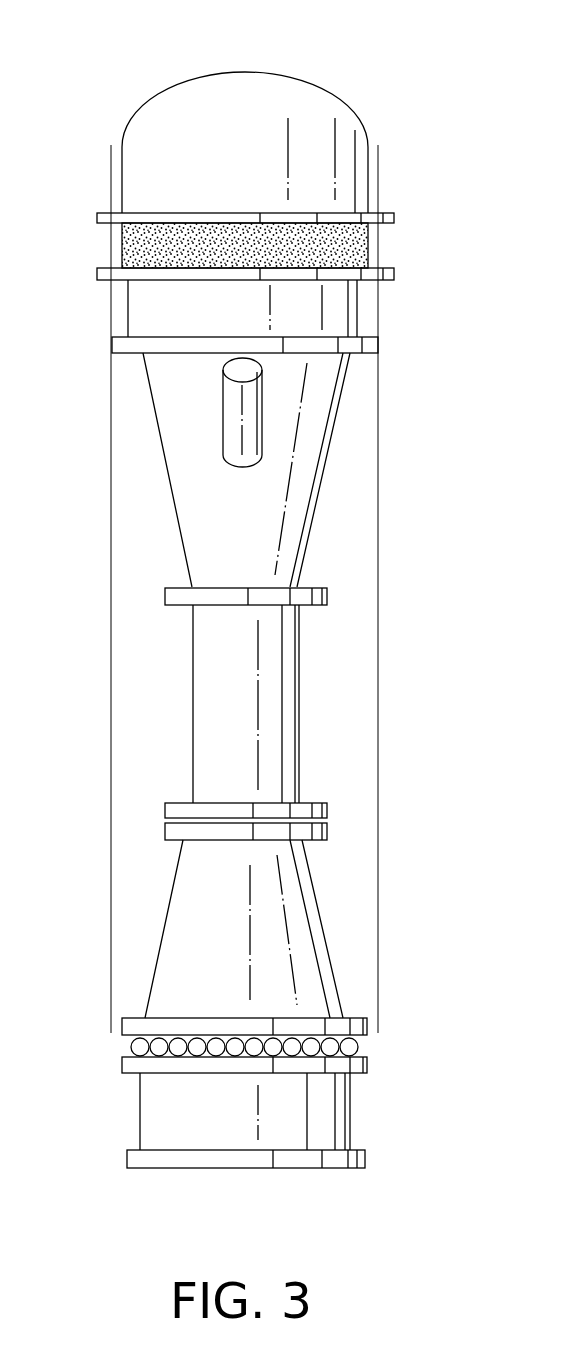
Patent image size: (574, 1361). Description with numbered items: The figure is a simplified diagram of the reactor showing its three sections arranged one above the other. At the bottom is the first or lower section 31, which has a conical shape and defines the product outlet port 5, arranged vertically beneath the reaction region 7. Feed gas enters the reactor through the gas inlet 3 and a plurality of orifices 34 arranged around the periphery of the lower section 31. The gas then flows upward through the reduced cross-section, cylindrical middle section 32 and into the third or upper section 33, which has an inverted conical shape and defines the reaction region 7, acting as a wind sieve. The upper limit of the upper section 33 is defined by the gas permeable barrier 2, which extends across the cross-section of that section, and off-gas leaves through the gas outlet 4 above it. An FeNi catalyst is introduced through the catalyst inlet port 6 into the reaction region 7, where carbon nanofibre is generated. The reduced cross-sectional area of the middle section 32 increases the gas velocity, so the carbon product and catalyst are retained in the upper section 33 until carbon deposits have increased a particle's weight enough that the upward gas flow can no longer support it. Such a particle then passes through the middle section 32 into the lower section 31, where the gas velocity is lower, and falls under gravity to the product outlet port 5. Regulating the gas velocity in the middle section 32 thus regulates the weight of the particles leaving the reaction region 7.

The gas permeable barrier 2 is at (353, 247).
The gas inlet 3 is at (96, 1046).
The gas outlet 4 is at (242, 90).
The product outlet port 5 is at (242, 1168).
The catalyst inlet port 6 is at (210, 388).
The reaction region 7 is at (227, 535).
The lower section 31 is at (400, 843).
The middle section 32 is at (400, 605).
The upper section 33 is at (294, 479).
The orifices 34 is at (358, 1047).